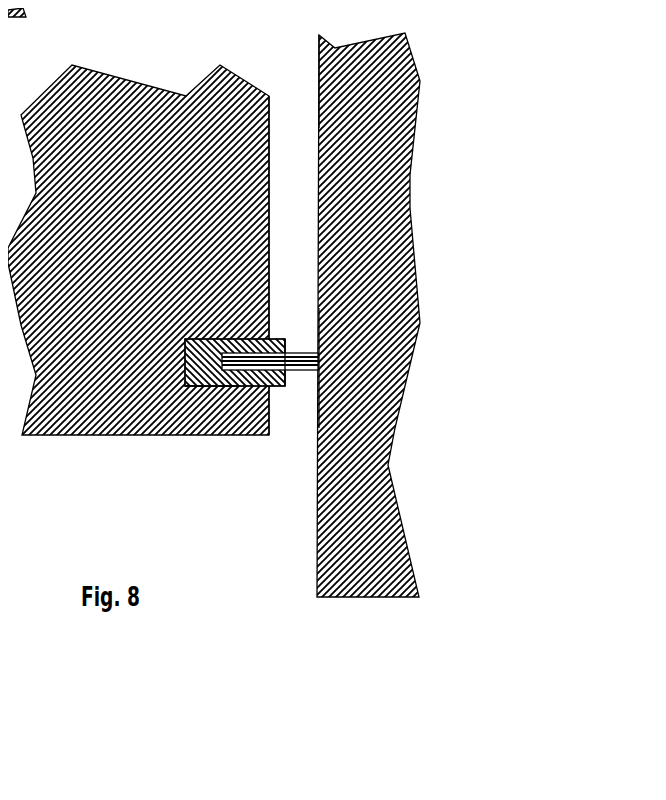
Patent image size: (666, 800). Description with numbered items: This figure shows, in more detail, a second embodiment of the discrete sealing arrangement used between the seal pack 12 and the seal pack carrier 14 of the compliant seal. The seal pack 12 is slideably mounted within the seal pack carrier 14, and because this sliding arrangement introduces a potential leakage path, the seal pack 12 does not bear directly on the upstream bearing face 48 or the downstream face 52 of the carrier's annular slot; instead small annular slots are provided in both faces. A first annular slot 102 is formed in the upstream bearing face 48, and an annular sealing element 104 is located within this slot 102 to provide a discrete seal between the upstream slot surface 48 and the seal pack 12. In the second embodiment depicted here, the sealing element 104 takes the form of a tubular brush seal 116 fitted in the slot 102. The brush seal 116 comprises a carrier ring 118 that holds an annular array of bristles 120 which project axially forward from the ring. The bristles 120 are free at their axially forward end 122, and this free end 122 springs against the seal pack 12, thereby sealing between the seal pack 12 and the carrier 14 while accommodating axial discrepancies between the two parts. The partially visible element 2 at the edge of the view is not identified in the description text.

The partial element 2 is at (17, 45).
The seal pack 12 is at (345, 590).
The seal pack carrier 14 is at (62, 427).
The upstream bearing face 48 is at (262, 103).
The downstream face of annular slot 52 is at (311, 43).
The first annular slot 102 is at (177, 362).
The annular sealing element 104 is at (259, 427).
The tubular brush seal 116 is at (215, 379).
The carrier ring 118 is at (274, 331).
The bristles 120 is at (280, 377).
The axially forward end of bristles 122 is at (311, 363).